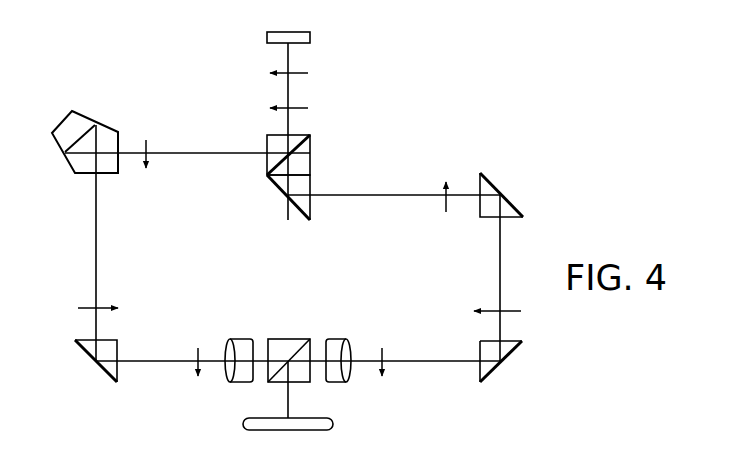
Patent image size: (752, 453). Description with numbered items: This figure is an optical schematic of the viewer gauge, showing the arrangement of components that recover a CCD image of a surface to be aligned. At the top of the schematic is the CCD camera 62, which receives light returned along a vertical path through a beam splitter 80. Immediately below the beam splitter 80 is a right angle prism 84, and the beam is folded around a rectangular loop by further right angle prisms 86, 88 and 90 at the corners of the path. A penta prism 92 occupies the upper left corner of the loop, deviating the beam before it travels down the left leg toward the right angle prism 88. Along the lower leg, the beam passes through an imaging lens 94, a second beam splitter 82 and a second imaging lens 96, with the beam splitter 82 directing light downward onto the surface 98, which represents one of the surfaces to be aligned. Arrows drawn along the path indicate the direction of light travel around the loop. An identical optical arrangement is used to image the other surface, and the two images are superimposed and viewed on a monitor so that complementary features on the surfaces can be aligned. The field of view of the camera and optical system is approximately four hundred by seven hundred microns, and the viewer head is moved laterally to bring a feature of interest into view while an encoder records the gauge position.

The CCD camera 62 is at (310, 38).
The beam splitter 80 is at (310, 153).
The beam splitter 82 is at (282, 338).
The right angle prism 84 is at (295, 208).
The right angle prism 86 is at (483, 177).
The right angle prism 88 is at (80, 345).
The right angle prism 90 is at (515, 350).
The penta prism 92 is at (77, 115).
The imaging lens 94 is at (237, 338).
The imaging lens 96 is at (337, 338).
The surface 98 is at (327, 417).